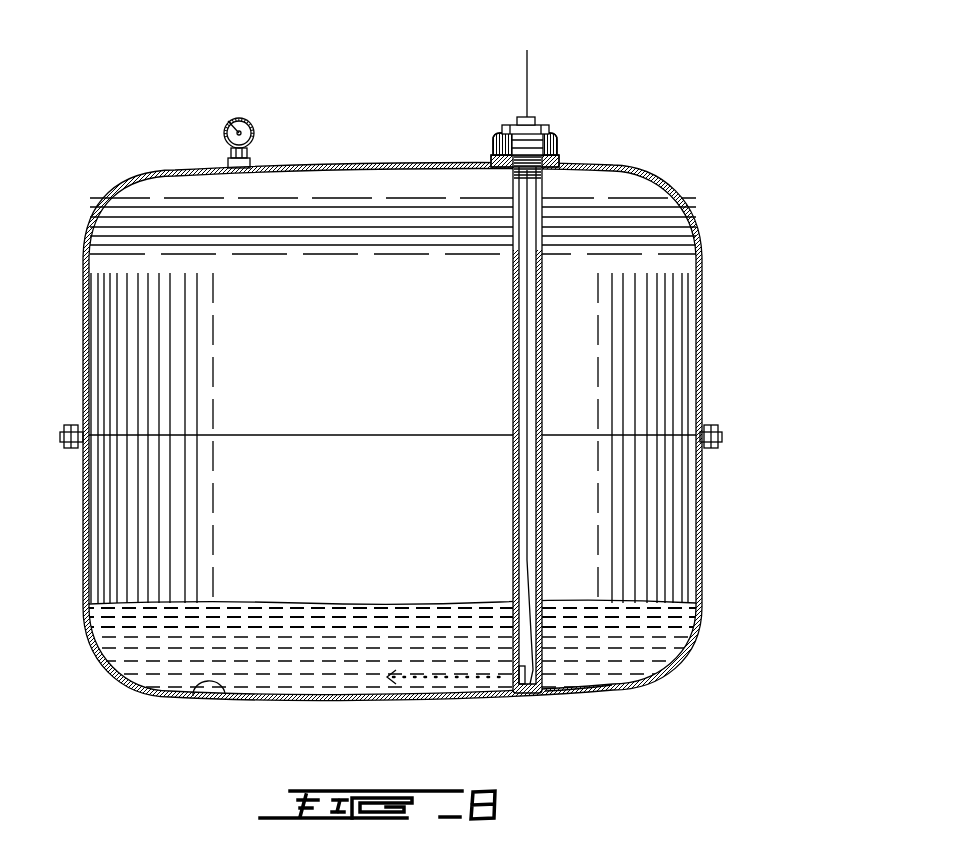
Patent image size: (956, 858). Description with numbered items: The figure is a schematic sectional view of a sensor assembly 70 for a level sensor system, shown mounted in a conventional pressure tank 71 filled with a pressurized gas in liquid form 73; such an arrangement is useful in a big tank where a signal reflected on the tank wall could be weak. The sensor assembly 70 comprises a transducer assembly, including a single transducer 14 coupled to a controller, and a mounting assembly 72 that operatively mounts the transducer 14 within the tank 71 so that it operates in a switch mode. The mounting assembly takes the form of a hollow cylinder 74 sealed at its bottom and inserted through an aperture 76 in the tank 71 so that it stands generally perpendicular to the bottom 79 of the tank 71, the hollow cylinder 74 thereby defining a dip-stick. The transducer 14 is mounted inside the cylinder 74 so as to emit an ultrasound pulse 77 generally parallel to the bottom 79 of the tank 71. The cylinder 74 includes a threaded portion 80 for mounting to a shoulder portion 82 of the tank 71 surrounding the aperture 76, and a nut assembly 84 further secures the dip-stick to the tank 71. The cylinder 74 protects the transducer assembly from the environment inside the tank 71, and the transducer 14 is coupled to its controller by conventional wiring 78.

The transducer 14 is at (538, 687).
The sensor assembly 70 is at (543, 215).
The tank 71 is at (704, 369).
The mounting assembly 72 is at (543, 580).
The pressurized gas in liquid form 73 is at (274, 655).
The hollow cylinder 74 is at (543, 535).
The aperture 76 is at (482, 182).
The ultrasound pulse 77 is at (433, 678).
The wiring 78 is at (528, 72).
The bottom 79 is at (190, 695).
The threaded portion 80 is at (573, 178).
The shoulder portion 82 is at (495, 140).
The nut assembly 84 is at (543, 137).